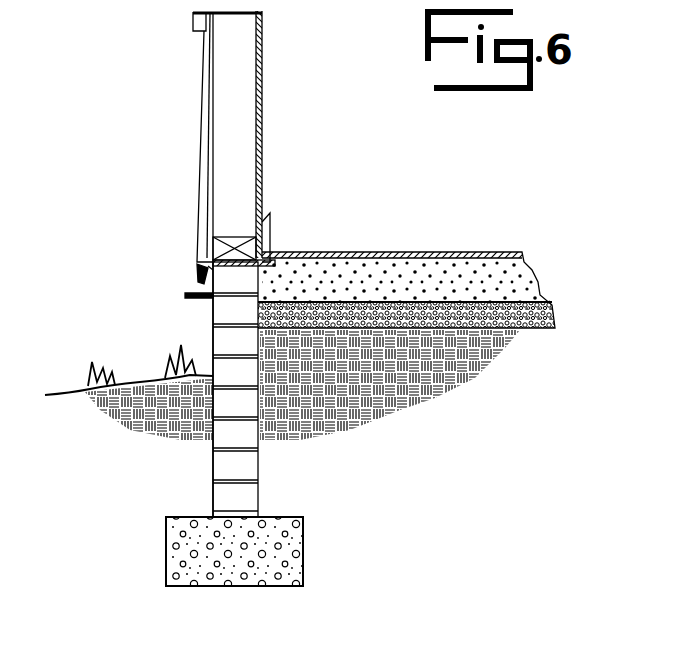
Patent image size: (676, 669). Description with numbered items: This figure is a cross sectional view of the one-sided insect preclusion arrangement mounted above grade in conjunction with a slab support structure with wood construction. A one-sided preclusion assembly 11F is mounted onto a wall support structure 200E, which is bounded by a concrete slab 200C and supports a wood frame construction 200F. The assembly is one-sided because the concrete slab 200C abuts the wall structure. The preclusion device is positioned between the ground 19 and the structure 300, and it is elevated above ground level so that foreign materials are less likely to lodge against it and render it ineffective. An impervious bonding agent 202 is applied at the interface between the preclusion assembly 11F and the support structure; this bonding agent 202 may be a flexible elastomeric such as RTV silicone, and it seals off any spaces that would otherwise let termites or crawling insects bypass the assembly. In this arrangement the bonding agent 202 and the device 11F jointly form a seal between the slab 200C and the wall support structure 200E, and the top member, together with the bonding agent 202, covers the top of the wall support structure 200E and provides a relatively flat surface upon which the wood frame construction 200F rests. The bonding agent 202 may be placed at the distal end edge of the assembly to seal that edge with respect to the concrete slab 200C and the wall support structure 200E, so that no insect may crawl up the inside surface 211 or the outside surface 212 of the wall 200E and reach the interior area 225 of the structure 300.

The interior area 225 is at (492, 152).
The wood frame construction 200F is at (243, 162).
The structure 300 is at (232, 237).
The one-sided preclusion assembly 11F is at (192, 269).
The bonding agent 202 is at (268, 265).
The concrete slab 200C is at (462, 278).
The wall support structure 200E is at (245, 403).
The ground 19 is at (85, 392).
The inside surface 211 is at (258, 462).
The outside surface 212 is at (212, 441).